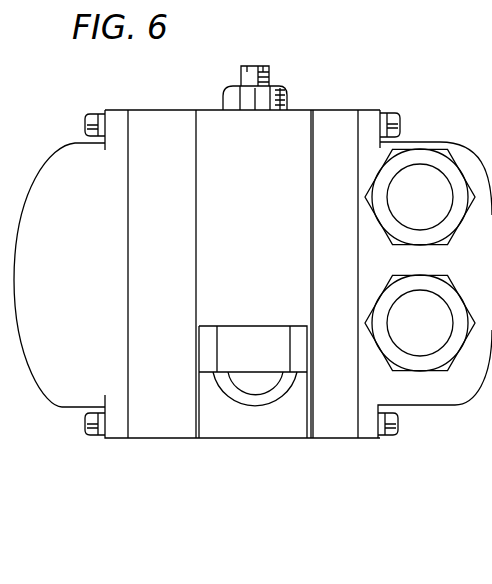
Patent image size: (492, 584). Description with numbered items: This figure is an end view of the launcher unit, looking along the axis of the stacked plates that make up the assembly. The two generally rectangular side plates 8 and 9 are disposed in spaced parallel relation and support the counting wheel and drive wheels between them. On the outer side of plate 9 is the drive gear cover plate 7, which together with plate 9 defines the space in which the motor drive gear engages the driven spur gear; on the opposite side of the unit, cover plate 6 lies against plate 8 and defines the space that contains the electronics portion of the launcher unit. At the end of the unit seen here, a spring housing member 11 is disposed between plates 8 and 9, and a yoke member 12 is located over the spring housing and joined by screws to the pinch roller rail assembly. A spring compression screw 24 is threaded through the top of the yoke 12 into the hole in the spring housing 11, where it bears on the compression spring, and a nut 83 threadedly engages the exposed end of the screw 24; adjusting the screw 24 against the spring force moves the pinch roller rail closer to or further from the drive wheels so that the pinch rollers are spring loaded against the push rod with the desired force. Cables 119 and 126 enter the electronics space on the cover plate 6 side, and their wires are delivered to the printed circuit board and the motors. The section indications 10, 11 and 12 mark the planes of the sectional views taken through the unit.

The cover plate 6 is at (372, 432).
The drive gear cover plate 7 is at (118, 114).
The side plate 8 is at (333, 430).
The side plate 9 is at (173, 438).
The section line 10- 10 is at (101, 100).
The spring housing member 11 is at (196, 100).
The yoke member 12 is at (257, 189).
The spring compression screw 24 is at (263, 76).
The nut 83 is at (287, 100).
The cable 119 is at (421, 178).
The cable 126 is at (429, 343).